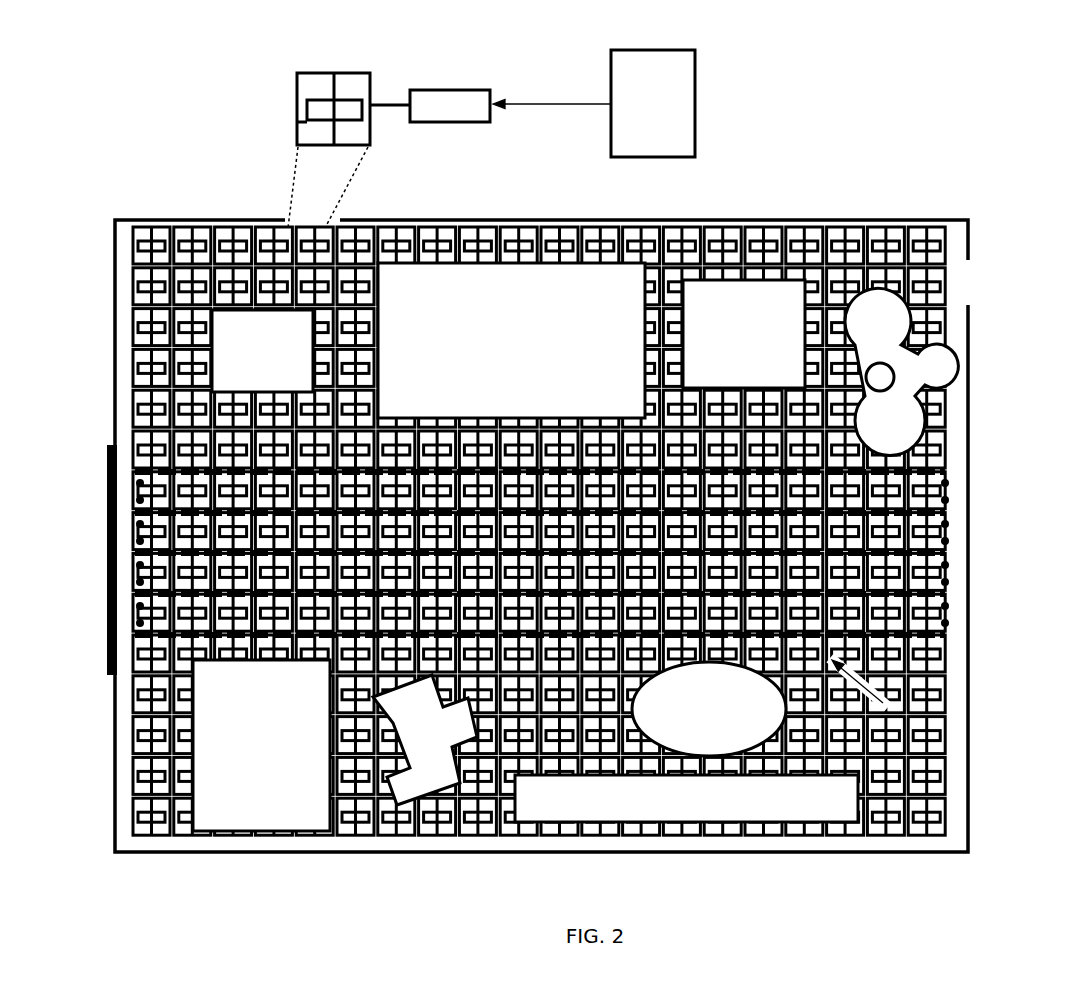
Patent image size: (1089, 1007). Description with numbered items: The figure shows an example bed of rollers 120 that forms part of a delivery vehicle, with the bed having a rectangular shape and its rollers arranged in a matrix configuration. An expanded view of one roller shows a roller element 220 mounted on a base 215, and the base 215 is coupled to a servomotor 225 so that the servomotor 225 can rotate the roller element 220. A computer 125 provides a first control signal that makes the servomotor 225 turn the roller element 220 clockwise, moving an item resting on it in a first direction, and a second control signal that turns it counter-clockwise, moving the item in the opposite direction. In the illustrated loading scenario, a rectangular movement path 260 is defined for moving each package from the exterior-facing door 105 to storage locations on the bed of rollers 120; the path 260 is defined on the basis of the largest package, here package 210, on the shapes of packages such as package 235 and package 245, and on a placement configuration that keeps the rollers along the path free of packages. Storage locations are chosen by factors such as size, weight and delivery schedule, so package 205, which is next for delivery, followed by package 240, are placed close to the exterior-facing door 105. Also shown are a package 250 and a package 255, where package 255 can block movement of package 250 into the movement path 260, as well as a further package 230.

The exterior-facing door 105 is at (95, 559).
The bed of rollers 120 is at (963, 284).
The computer 125 is at (594, 103).
The package 205 is at (262, 351).
The package 210 is at (511, 340).
The base 215 is at (297, 122).
The roller element 220 is at (311, 81).
The servomotor 225 is at (430, 106).
The third object 230 is at (744, 334).
The package 235 is at (901, 371).
The package 240 is at (261, 745).
The package 245 is at (425, 740).
The package 250 is at (686, 798).
The package 255 is at (709, 709).
The movement path 260 is at (878, 700).